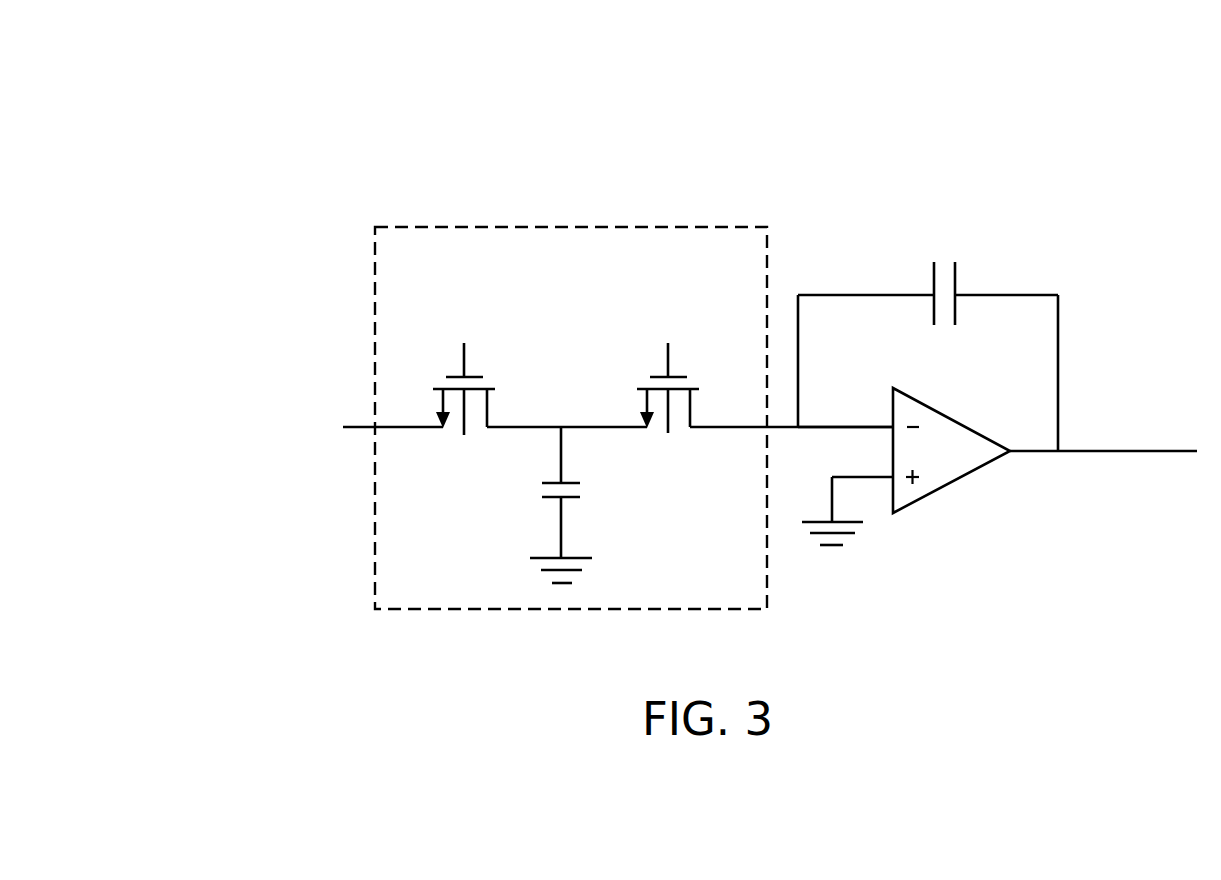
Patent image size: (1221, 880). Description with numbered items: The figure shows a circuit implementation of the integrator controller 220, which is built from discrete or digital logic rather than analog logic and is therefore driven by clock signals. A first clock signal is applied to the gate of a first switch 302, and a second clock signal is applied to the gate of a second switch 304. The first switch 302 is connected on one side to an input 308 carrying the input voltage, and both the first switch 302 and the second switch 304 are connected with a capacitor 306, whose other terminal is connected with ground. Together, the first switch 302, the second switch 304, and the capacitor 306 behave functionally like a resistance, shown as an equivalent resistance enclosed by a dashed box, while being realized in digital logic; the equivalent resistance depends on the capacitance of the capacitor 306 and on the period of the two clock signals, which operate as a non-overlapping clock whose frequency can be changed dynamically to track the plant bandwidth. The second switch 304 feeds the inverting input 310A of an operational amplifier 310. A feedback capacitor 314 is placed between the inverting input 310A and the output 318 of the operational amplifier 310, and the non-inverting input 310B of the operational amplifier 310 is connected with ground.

The integrator controller 220 is at (215, 109).
The first switch 302 is at (464, 435).
The second switch 304 is at (647, 386).
The capacitor 306 is at (553, 497).
The input 308 is at (358, 430).
The operational amplifier 310 is at (962, 478).
The inverting input 310A is at (892, 421).
The non-inverting input 310B is at (893, 480).
The capacitor 314 is at (934, 275).
The output 318 is at (1130, 448).